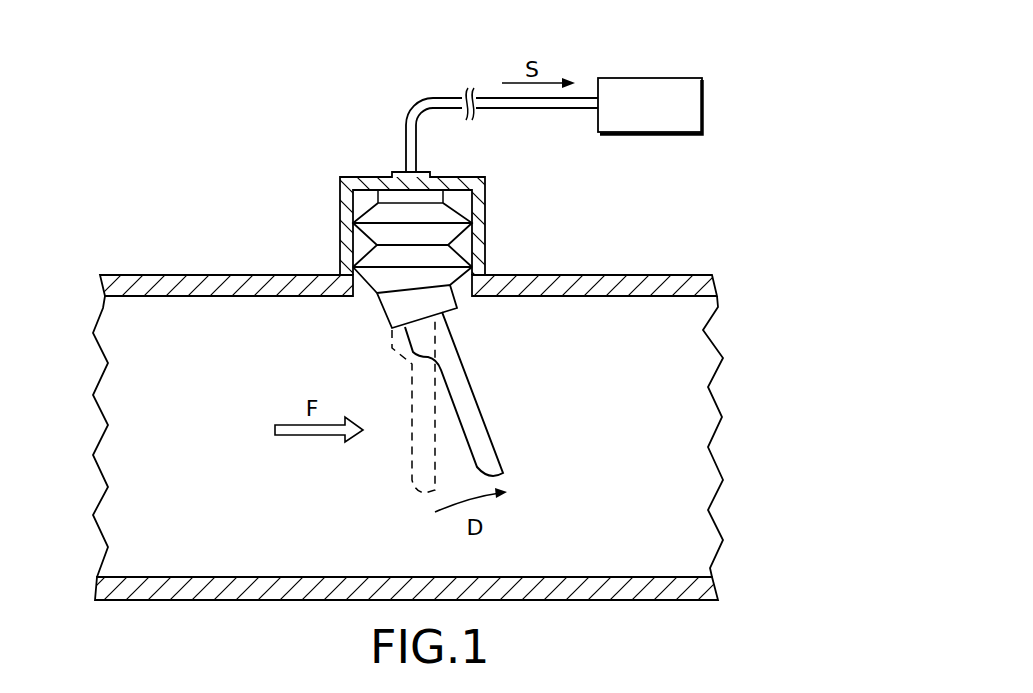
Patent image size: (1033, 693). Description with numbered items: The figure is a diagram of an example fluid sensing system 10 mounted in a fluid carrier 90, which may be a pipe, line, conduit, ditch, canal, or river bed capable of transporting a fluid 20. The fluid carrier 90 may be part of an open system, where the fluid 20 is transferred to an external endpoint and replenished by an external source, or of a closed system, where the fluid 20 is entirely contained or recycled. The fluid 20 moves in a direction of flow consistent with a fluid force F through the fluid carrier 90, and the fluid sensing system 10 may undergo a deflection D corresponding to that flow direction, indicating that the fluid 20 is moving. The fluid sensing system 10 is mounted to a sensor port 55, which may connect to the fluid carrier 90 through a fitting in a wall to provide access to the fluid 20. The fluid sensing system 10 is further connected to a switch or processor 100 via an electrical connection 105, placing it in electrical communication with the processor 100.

The fluid sensing system 10 is at (364, 331).
The fluid 20 is at (543, 440).
The sensor port 55 is at (485, 218).
The fluid carrier 90 is at (223, 275).
The processor 100 is at (653, 78).
The electrical connection 105 is at (406, 137).